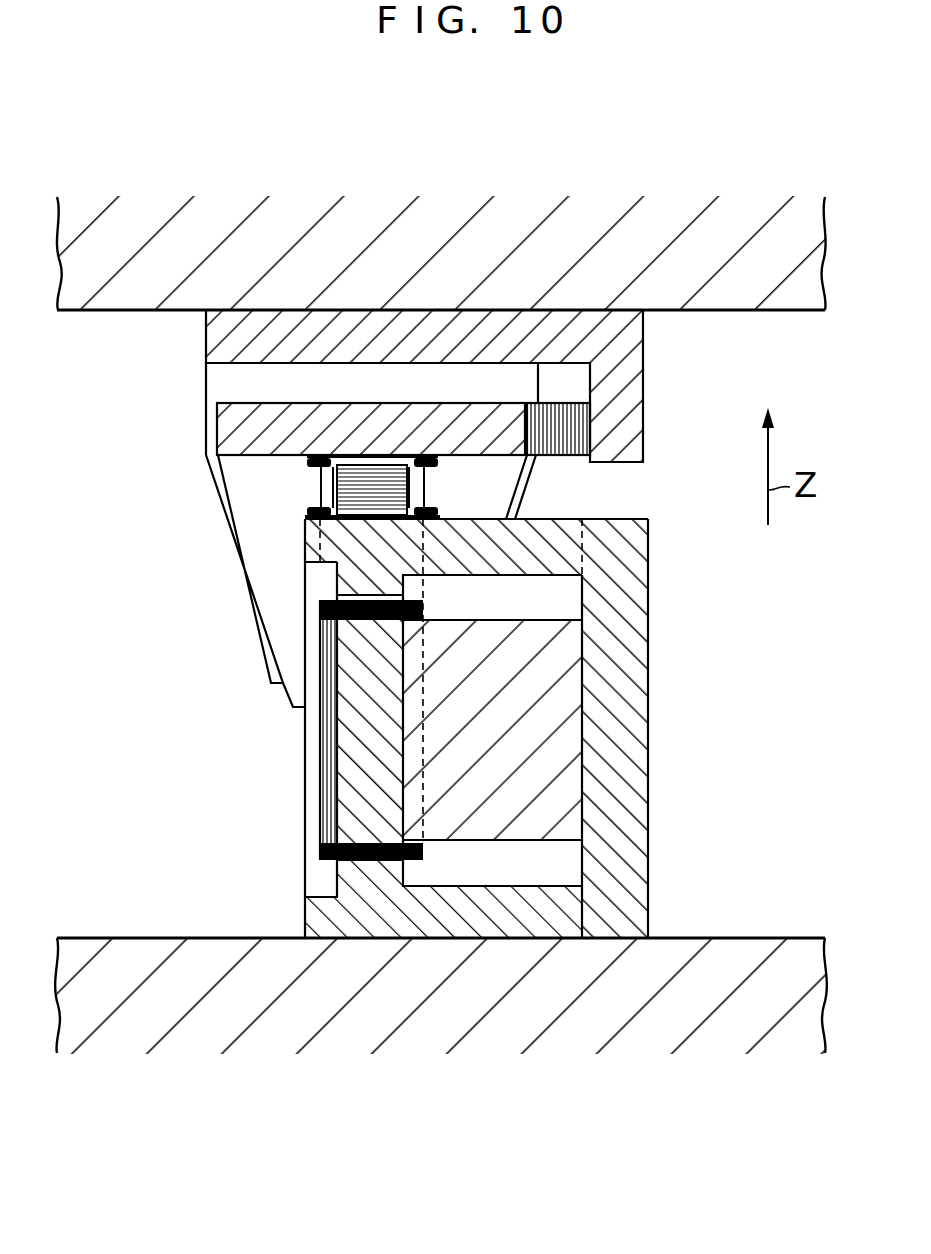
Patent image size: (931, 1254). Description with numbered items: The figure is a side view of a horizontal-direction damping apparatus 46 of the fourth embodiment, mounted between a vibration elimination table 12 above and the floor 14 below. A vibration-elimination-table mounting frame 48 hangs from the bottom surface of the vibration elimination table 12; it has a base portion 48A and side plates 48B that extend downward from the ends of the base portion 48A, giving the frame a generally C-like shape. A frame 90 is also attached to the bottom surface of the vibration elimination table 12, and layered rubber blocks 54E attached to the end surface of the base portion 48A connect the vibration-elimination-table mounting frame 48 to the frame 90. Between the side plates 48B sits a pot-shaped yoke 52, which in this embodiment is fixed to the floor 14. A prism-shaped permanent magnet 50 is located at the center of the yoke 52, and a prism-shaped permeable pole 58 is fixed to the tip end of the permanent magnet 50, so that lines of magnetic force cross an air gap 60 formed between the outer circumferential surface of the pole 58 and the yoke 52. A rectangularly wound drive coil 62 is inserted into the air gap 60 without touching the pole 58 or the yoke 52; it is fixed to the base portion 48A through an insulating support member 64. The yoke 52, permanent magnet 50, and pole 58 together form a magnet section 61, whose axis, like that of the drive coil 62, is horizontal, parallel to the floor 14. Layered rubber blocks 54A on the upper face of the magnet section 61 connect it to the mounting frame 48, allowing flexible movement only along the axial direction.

The vibration elimination table 12 is at (97, 312).
The floor 14 is at (132, 937).
The frame 90 is at (206, 327).
The vibration-elimination-table mounting frame 48 is at (215, 432).
The base portion 48A is at (450, 400).
The side plates 48B is at (272, 580).
The layered rubber blocks 54E is at (560, 457).
The support member 64 is at (337, 478).
The layered rubber blocks 54A is at (335, 488).
The horizontal-direction damping apparatus 46 is at (736, 670).
The yoke 52 is at (648, 872).
The magnet section 61 is at (656, 790).
The permanent magnet 50 is at (465, 842).
The pole 58 is at (362, 743).
The drive coil 62 is at (316, 853).
The air gap 60 is at (330, 862).